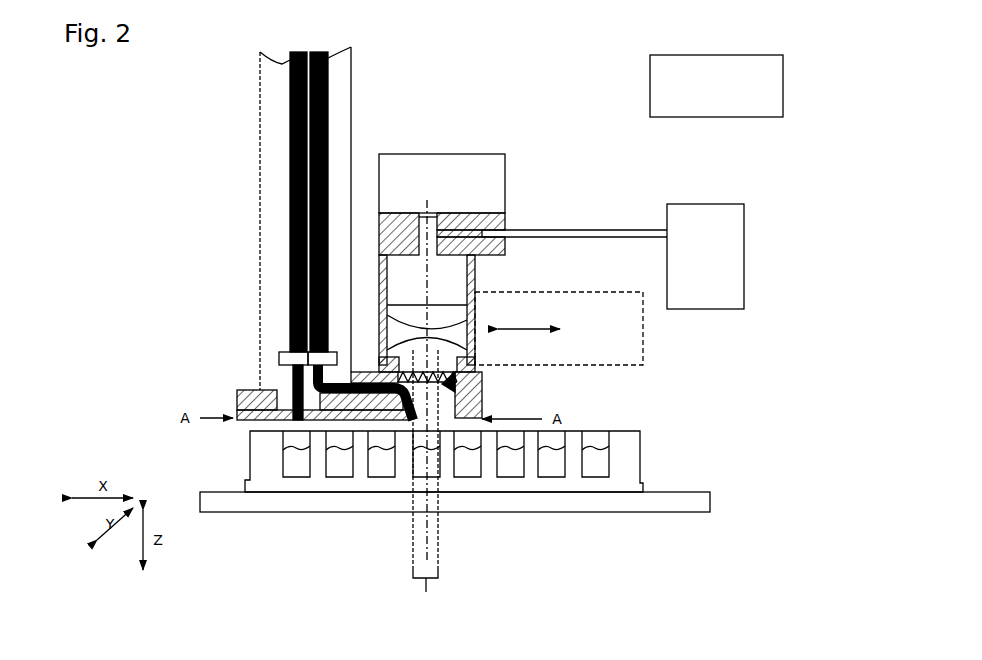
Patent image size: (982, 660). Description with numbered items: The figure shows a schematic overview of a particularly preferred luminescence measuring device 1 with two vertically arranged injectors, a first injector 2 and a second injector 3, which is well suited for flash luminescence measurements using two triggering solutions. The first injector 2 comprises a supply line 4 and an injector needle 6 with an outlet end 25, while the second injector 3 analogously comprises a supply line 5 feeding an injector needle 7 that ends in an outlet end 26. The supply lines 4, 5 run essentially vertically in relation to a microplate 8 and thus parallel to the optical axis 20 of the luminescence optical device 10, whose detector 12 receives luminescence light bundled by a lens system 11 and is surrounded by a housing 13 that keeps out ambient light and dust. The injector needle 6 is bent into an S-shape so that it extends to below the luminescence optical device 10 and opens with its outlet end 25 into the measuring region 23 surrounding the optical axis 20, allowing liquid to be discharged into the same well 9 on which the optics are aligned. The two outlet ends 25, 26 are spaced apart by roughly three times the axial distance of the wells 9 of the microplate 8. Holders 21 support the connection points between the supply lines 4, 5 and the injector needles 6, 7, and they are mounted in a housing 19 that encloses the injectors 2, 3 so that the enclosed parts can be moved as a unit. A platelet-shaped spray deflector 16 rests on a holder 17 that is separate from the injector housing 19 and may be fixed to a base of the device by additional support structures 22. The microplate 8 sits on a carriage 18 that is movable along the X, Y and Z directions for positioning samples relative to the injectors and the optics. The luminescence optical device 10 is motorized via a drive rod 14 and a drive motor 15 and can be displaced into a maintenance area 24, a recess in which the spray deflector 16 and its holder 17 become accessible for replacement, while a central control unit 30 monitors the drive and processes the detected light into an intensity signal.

The luminescence measuring device 1 is at (509, 93).
The first injector 2 is at (337, 92).
The second injector 3 is at (277, 92).
The supply line 4 is at (327, 143).
The supply line 5 is at (292, 138).
The injector needle 6 is at (362, 420).
The injector needle 7 is at (290, 390).
The microplate 8 is at (647, 467).
The well 9 is at (602, 425).
The luminescence optical device 10 is at (466, 263).
The lens system 11 is at (447, 342).
The detector 12 is at (442, 183).
The housing 13 is at (443, 313).
The drive rod 14 is at (587, 230).
The drive motor 15 is at (705, 256).
The spray deflector 16 is at (439, 386).
The holder 17 is at (482, 377).
The carriage 18 is at (232, 499).
The housing 19 is at (260, 237).
The optical axis 20 is at (425, 522).
The holders 21 is at (322, 358).
The support structures 22 is at (245, 403).
The measuring region 23 is at (425, 592).
The maintenance area 24 is at (559, 328).
The outlet end 25 is at (412, 420).
The outlet end 26 is at (290, 420).
The control unit 30 is at (716, 86).